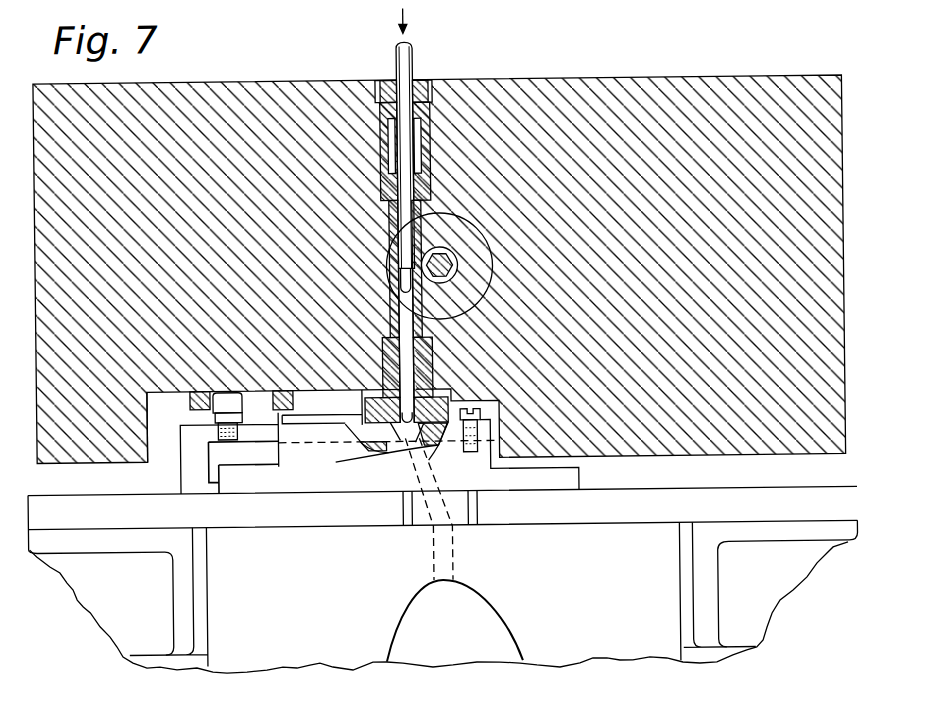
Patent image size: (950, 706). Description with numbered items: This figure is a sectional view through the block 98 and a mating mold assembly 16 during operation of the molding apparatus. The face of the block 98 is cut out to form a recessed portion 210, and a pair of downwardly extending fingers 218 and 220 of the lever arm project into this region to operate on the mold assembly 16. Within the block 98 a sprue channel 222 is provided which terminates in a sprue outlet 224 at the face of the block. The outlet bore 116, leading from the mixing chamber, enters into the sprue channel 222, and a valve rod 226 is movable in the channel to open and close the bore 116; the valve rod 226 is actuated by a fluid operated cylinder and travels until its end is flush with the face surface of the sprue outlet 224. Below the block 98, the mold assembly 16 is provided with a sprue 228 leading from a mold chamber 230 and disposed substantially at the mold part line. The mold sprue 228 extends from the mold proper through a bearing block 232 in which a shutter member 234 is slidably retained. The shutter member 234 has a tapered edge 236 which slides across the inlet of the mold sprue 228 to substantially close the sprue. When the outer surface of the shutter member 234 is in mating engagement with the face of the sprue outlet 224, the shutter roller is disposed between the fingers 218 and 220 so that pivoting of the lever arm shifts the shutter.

The block 98 is at (667, 79).
The valve rod 226 is at (401, 56).
The outlet bore 116 is at (395, 288).
The sprue channel 222 is at (414, 366).
The finger 218 is at (190, 401).
The finger 220 is at (294, 399).
The recessed portion 210 is at (152, 452).
The bearing block 232 is at (205, 479).
The shutter member 234 is at (250, 440).
The tapered edge 236 is at (382, 442).
The sprue 228 is at (421, 468).
The sprue outlet 224 is at (428, 447).
The mold chamber 230 is at (396, 632).
The mold assembly 16 is at (633, 667).